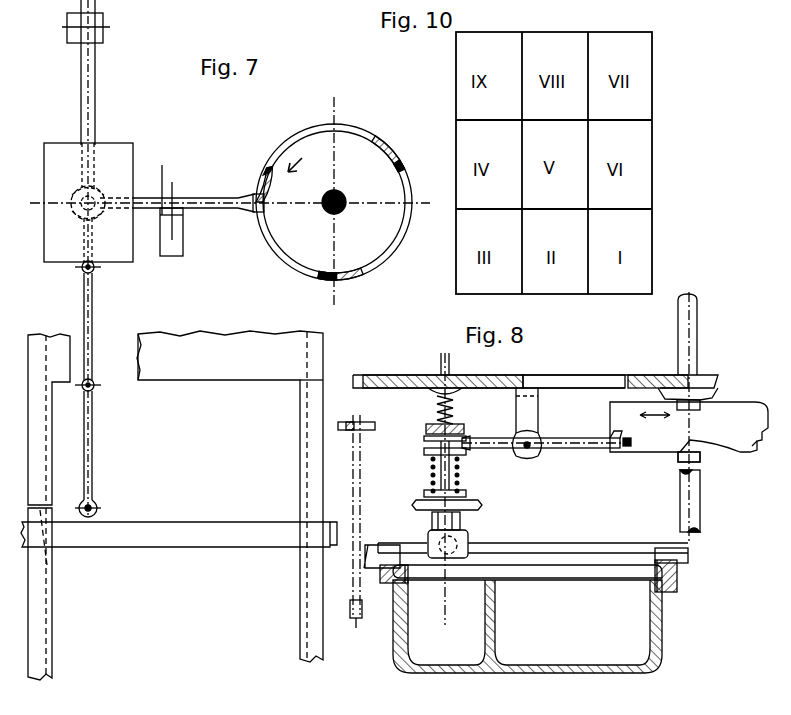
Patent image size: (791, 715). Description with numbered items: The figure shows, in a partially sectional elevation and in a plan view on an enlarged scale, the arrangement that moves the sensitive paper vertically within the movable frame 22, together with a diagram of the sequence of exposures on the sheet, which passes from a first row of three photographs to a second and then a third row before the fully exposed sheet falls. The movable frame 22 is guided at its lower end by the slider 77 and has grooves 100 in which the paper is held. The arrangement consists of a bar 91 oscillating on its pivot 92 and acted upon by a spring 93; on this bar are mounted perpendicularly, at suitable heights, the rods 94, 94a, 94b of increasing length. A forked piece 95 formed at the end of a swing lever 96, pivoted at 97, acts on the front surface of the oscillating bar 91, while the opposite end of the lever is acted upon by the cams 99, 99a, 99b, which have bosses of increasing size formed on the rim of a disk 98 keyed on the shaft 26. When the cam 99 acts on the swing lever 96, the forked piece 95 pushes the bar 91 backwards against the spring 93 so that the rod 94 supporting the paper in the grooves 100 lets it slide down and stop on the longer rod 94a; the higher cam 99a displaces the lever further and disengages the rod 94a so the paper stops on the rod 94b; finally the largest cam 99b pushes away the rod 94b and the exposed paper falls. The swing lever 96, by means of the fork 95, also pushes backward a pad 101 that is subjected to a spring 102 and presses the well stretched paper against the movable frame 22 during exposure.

In FIG. 7, the movable frame 22 is at (316, 466).
In FIG. 8, the movable frame 22 is at (665, 596).
In FIG. 7, the shaft 26 is at (326, 210).
In FIG. 8, the shaft 26 is at (690, 347).
In FIG. 7, the slider 77 is at (183, 536).
In FIG. 7, the oscillating bar 91 is at (88, 100).
In FIG. 8, the oscillating bar 91 is at (438, 428).
In FIG. 7, the pivot 92 is at (103, 40).
In FIG. 8, the spring 93 is at (455, 405).
In FIG. 7, the rod 94 is at (95, 270).
In FIG. 8, the rod 94 is at (356, 495).
In FIG. 7, the rod 94a is at (96, 388).
In FIG. 8, the rod 94a is at (358, 602).
In FIG. 7, the rod 94b is at (98, 507).
In FIG. 8, the rod 94b is at (357, 620).
In FIG. 7, the forked piece 95 is at (66, 190).
In FIG. 8, the forked piece 95 is at (462, 443).
In FIG. 7, the swing lever 96 is at (165, 201).
In FIG. 8, the swing lever 96 is at (556, 438).
In FIG. 7, the pivot 97 is at (173, 203).
In FIG. 8, the pivot 97 is at (531, 449).
In FIG. 7, the disk 98 is at (345, 158).
In FIG. 8, the disk 98 is at (672, 425).
In FIG. 7, the cam 99 is at (268, 155).
In FIG. 8, the cam 99 is at (628, 447).
In FIG. 7, the cam 99a is at (394, 160).
In FIG. 8, the cam 99a is at (756, 443).
In FIG. 7, the cam 99b is at (350, 273).
In FIG. 8, the cam 99b is at (692, 440).
In FIG. 7, the grooves 100 is at (48, 472).
In FIG. 8, the grooves 100 is at (406, 575).
In FIG. 7, the pad 101 is at (60, 250).
In FIG. 8, the pad 101 is at (487, 566).
In FIG. 8, the spring 102 is at (462, 465).